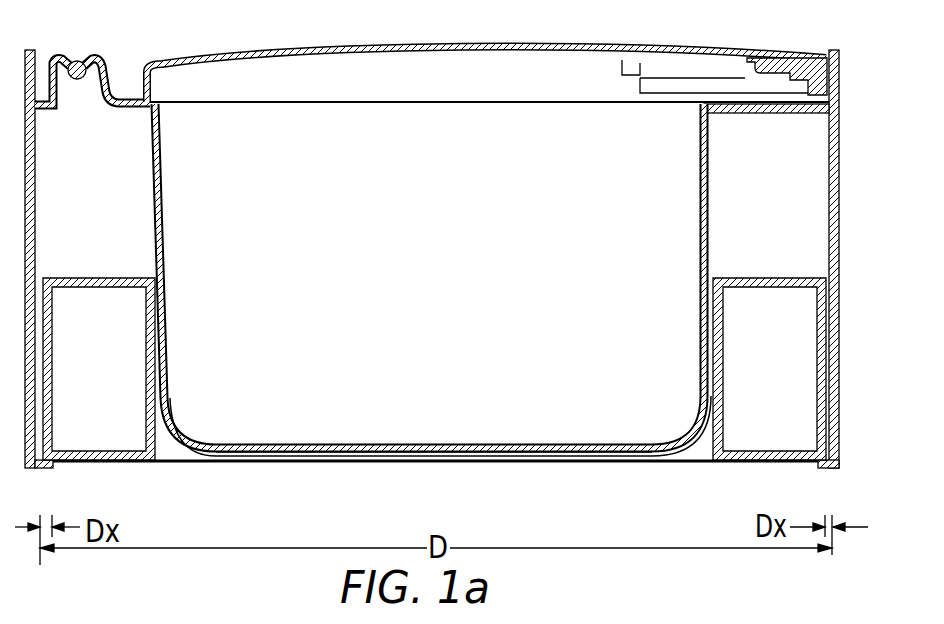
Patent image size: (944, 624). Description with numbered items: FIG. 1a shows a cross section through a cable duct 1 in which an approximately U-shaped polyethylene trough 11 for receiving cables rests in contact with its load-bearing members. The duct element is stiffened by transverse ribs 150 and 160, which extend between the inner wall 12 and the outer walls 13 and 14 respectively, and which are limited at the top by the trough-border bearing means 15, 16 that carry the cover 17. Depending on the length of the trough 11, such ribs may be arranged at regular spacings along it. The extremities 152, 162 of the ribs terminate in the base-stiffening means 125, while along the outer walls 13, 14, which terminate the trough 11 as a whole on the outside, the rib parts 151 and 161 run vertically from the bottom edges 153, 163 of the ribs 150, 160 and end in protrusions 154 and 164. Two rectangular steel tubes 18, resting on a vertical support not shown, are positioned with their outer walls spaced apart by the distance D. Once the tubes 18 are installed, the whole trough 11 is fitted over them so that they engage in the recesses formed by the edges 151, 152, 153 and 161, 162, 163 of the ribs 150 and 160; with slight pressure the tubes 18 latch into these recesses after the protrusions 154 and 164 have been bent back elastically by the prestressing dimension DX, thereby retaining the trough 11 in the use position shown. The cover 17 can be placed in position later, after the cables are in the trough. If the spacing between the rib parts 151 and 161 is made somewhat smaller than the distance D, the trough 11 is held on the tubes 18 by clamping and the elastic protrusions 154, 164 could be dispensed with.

The cable duct 1 is at (848, 208).
The polyethylene trough 11 is at (315, 288).
The inner wall 12 is at (453, 460).
The base-stiffening means 125 is at (605, 457).
The outer wall 13 is at (838, 108).
The outer wall 14 is at (38, 188).
The trough-border bearing means 15 is at (763, 103).
The rib 150 is at (798, 158).
The rib part 151 is at (830, 338).
The extremity of the rib 152 is at (728, 325).
The bottom edge 153 is at (785, 278).
The protrusion 154 is at (823, 470).
The trough-border bearing means 16 is at (115, 110).
The rib 160 is at (128, 145).
The rib part 161 is at (40, 367).
The extremity of the rib 162 is at (143, 325).
The bottom edge 163 is at (92, 278).
The protrusion 164 is at (47, 468).
The cover 17 is at (518, 50).
The rectangular steel tubes 18 is at (50, 398).